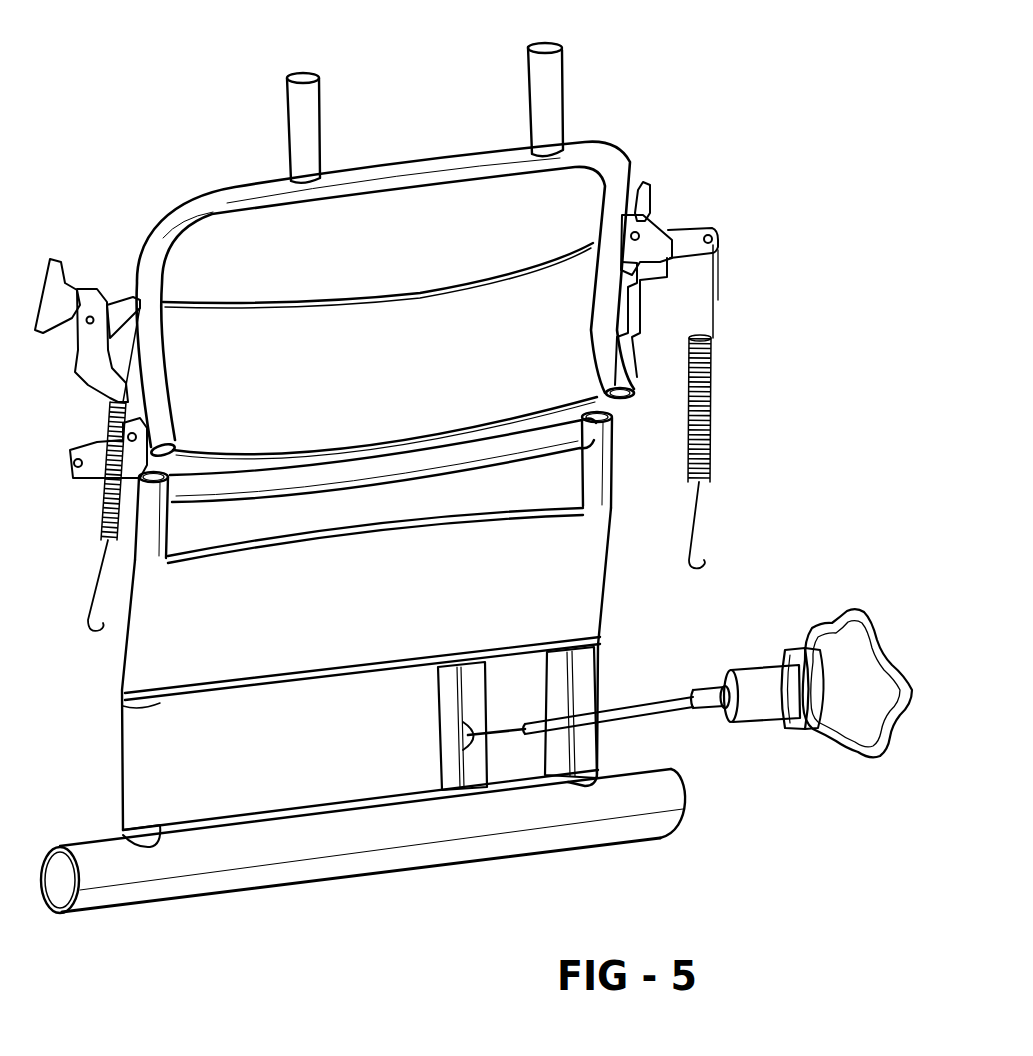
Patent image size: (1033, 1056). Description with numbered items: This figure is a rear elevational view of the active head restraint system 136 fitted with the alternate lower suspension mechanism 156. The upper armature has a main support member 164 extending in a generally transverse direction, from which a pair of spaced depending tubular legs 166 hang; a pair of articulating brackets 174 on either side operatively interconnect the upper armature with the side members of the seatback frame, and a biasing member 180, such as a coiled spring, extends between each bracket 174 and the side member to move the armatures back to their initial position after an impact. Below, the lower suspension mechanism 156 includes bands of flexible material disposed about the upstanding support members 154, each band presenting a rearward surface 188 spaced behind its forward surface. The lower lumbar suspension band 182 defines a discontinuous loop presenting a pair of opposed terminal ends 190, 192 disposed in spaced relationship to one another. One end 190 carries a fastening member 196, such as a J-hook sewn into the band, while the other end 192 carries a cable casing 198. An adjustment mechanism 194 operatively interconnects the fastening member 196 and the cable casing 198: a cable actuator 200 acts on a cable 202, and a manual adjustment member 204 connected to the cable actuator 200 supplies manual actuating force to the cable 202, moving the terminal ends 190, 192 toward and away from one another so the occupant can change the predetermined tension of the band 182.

The active head restraint system 136 is at (679, 134).
The upstanding support members 154 is at (155, 528).
The lower suspension mechanism 156 is at (112, 723).
The main support member 164 is at (458, 163).
The depending tubular legs 166 is at (595, 193).
The articulating brackets 174 is at (689, 230).
The biasing member 180 is at (713, 385).
The lower lumbar suspension band 182 is at (156, 785).
The rearward surface 188 is at (413, 587).
The terminal end 190 is at (450, 710).
The terminal end 192 is at (595, 752).
The adjustment mechanism 194 is at (785, 729).
The fastening member 196 is at (473, 772).
The cable casing 198 is at (558, 767).
The cable actuator 200 is at (752, 680).
The cable 202 is at (655, 700).
The manual adjustment member 204 is at (843, 750).